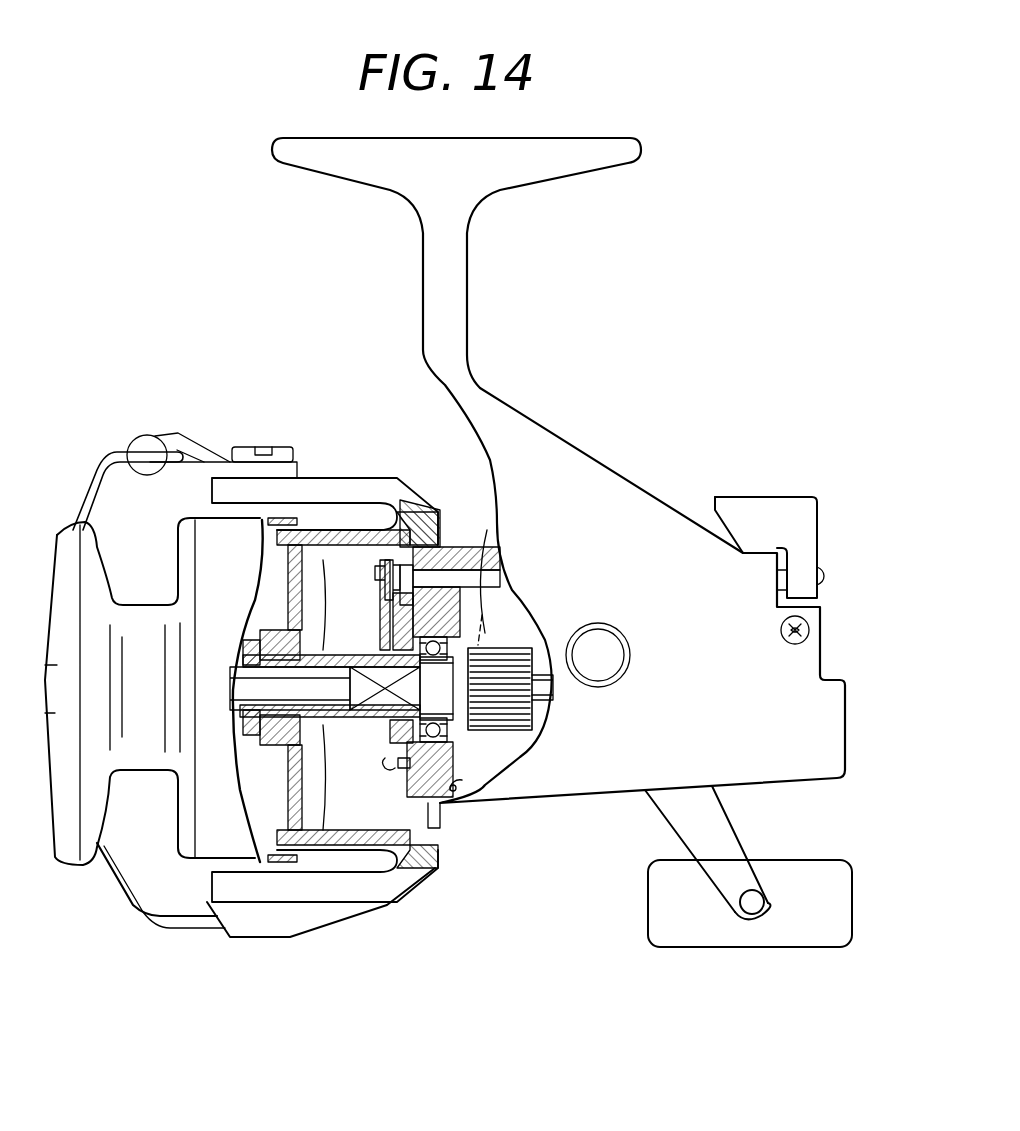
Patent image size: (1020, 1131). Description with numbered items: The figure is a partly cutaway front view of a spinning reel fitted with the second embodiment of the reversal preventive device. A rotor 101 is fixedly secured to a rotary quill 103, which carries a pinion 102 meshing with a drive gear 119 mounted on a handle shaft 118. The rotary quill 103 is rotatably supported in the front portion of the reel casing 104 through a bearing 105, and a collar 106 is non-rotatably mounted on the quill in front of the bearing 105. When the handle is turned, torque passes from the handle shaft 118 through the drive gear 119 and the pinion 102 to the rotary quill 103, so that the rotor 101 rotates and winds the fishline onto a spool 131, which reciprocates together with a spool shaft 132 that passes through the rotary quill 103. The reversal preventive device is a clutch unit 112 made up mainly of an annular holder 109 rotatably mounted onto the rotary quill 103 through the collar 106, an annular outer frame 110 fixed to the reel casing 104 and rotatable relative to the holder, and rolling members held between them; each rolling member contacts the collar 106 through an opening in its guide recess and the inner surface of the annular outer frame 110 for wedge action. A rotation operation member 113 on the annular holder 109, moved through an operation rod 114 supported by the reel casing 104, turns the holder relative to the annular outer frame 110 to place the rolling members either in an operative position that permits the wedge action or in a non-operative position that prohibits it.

The rotor 101 is at (322, 600).
The pinion 102 is at (543, 640).
The rotary quill 103 is at (340, 540).
The reel casing 104 is at (697, 550).
The bearing 105 is at (452, 797).
The collar 106 is at (345, 745).
The annular holder 109 is at (428, 545).
The annular outer frame 110 is at (435, 830).
The clutch unit 112 is at (388, 740).
The rotation operation member 113 is at (380, 560).
The operation rod 114 is at (512, 647).
The handle shaft 118 is at (593, 625).
The drive gear 119 is at (518, 740).
The spool 131 is at (70, 535).
The spool shaft 132 is at (312, 700).